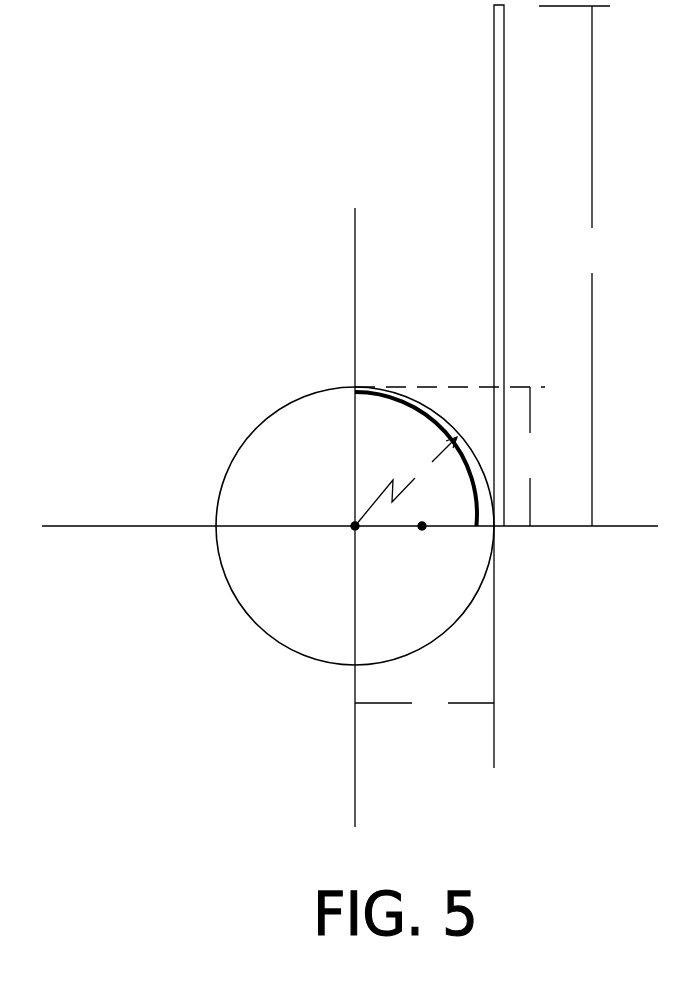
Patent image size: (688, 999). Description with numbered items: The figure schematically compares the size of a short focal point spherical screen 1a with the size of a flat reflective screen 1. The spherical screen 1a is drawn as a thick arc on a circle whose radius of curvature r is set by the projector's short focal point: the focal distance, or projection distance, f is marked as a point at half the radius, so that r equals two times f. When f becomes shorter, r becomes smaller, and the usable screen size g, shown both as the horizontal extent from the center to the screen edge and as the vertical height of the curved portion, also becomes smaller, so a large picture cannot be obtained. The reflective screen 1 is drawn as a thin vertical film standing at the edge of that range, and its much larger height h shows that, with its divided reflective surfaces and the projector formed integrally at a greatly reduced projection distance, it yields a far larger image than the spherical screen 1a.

The reflective screen 1 is at (494, 154).
The spherical screen 1a is at (376, 388).
The height dimension of plate h is at (574, 266).
The screen size g is at (447, 577).
The radius of curvature r is at (406, 481).
The focal distance f is at (422, 545).